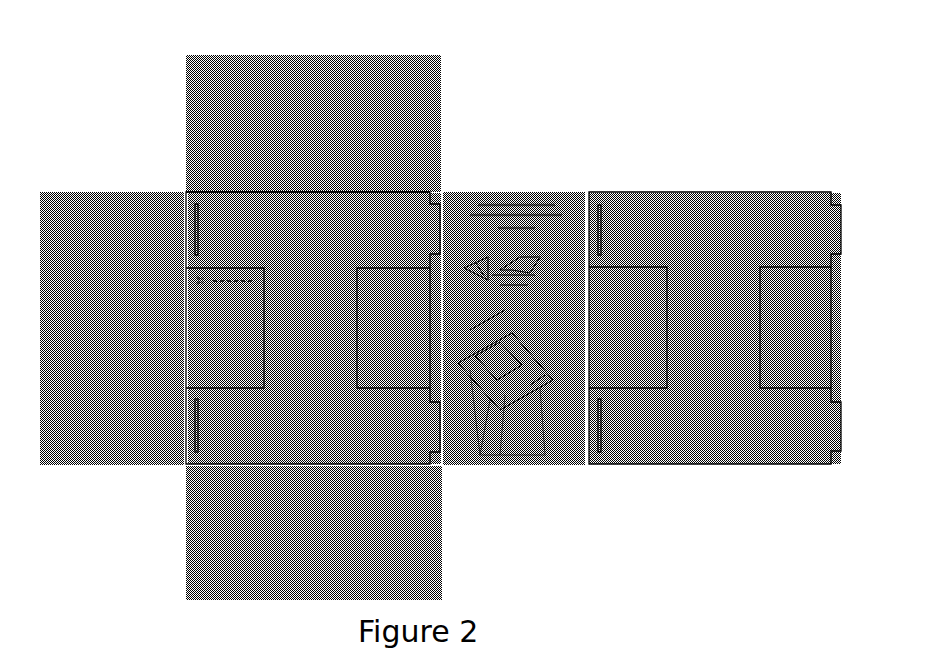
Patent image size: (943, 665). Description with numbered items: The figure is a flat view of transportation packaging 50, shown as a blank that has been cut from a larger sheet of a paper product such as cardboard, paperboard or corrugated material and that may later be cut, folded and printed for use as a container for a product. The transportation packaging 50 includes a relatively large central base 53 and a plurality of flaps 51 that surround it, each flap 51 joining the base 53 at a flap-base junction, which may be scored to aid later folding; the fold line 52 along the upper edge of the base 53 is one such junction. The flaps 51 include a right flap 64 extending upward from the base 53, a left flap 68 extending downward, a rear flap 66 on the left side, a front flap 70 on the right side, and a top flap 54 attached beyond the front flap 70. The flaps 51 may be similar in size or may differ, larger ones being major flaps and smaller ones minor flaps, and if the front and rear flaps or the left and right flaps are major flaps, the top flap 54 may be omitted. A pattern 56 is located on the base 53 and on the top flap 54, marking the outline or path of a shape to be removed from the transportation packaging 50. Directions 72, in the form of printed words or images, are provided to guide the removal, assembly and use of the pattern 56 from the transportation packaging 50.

The transportation packaging 50 is at (616, 32).
The flaps 51 is at (100, 190).
The fold line 52 is at (305, 197).
The base 53 is at (329, 342).
The top flap 54 is at (707, 198).
The pattern 56 is at (264, 307).
The right flap 64 is at (441, 88).
The rear flap 66 is at (140, 190).
The left flap 68 is at (438, 524).
The front flap 70 is at (480, 453).
The directions 72 is at (188, 293).